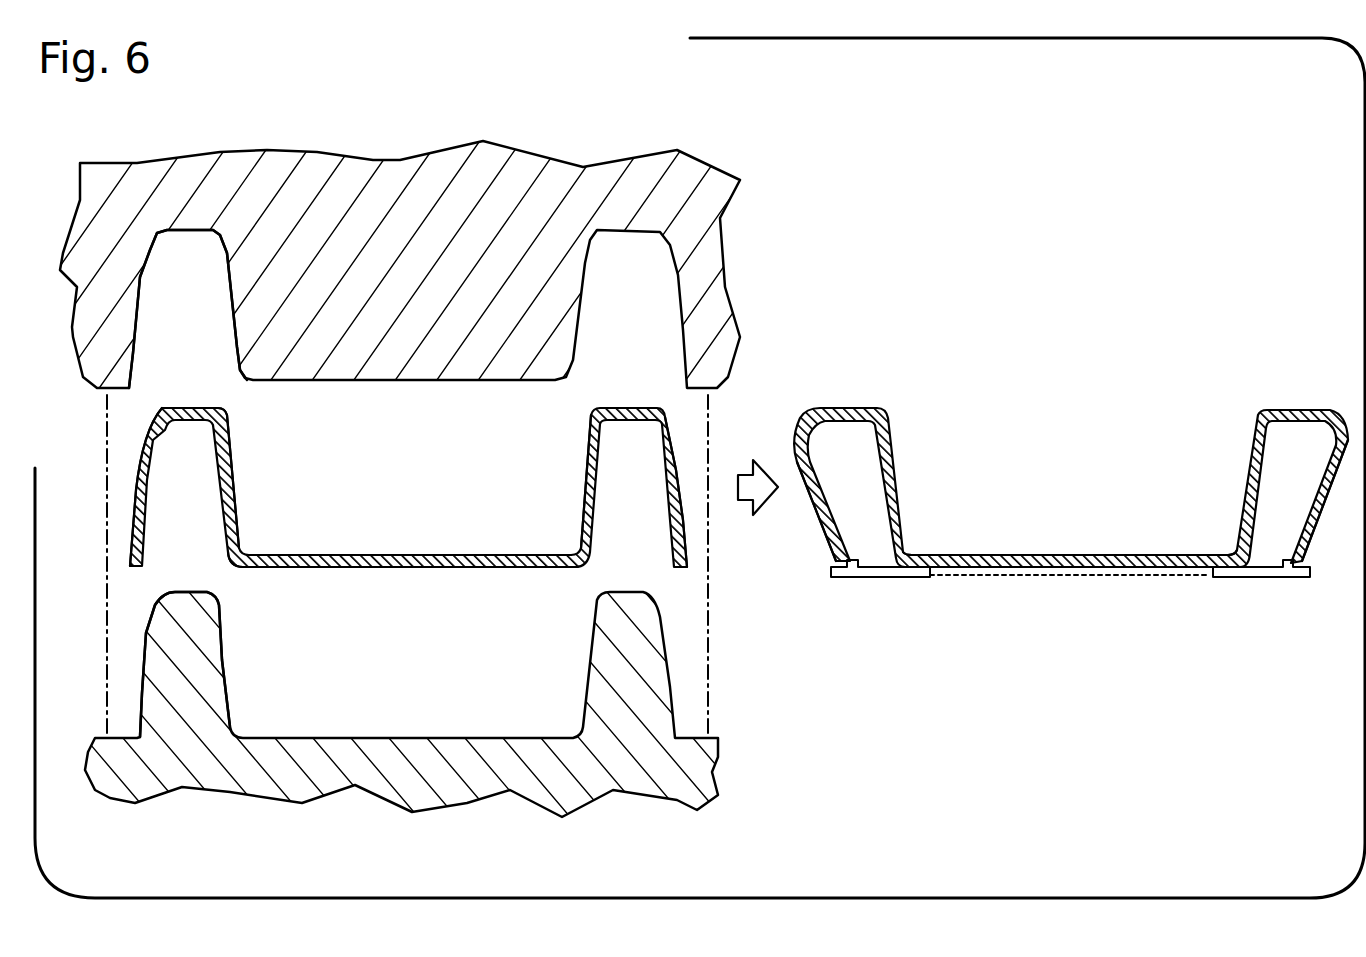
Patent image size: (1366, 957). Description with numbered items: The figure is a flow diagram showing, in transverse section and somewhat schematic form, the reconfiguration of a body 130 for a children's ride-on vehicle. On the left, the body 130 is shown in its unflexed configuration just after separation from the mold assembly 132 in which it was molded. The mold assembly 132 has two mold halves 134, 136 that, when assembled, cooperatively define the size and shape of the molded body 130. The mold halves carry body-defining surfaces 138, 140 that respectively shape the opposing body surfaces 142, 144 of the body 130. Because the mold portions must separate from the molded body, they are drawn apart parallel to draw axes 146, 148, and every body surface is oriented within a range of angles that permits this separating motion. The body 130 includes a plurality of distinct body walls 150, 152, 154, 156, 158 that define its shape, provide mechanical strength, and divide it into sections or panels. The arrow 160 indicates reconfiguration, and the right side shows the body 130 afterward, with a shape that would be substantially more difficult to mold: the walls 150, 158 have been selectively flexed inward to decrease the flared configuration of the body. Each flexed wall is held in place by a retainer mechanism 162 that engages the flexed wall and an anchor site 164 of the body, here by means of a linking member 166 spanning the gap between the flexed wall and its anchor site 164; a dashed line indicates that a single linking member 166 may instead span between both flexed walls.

The body 130 is at (386, 474).
The mold assembly 132 is at (160, 114).
The mold half 134 is at (137, 162).
The mold half 136 is at (247, 798).
The body-defining surface 138 is at (235, 327).
The body-defining surface 140 is at (230, 688).
The body surface 142 is at (240, 513).
The body surface 144 is at (228, 530).
The draw axis 146 is at (105, 563).
The draw axis 148 is at (710, 630).
The body wall 150 is at (150, 458).
The body wall 152 is at (235, 462).
The body wall 154 is at (363, 553).
The body wall 156 is at (580, 490).
The body wall 158 is at (670, 493).
The arrow 160 is at (750, 471).
The retainer mechanism 162 is at (880, 591).
The anchor site 164 is at (922, 555).
The linking member 166 is at (927, 578).